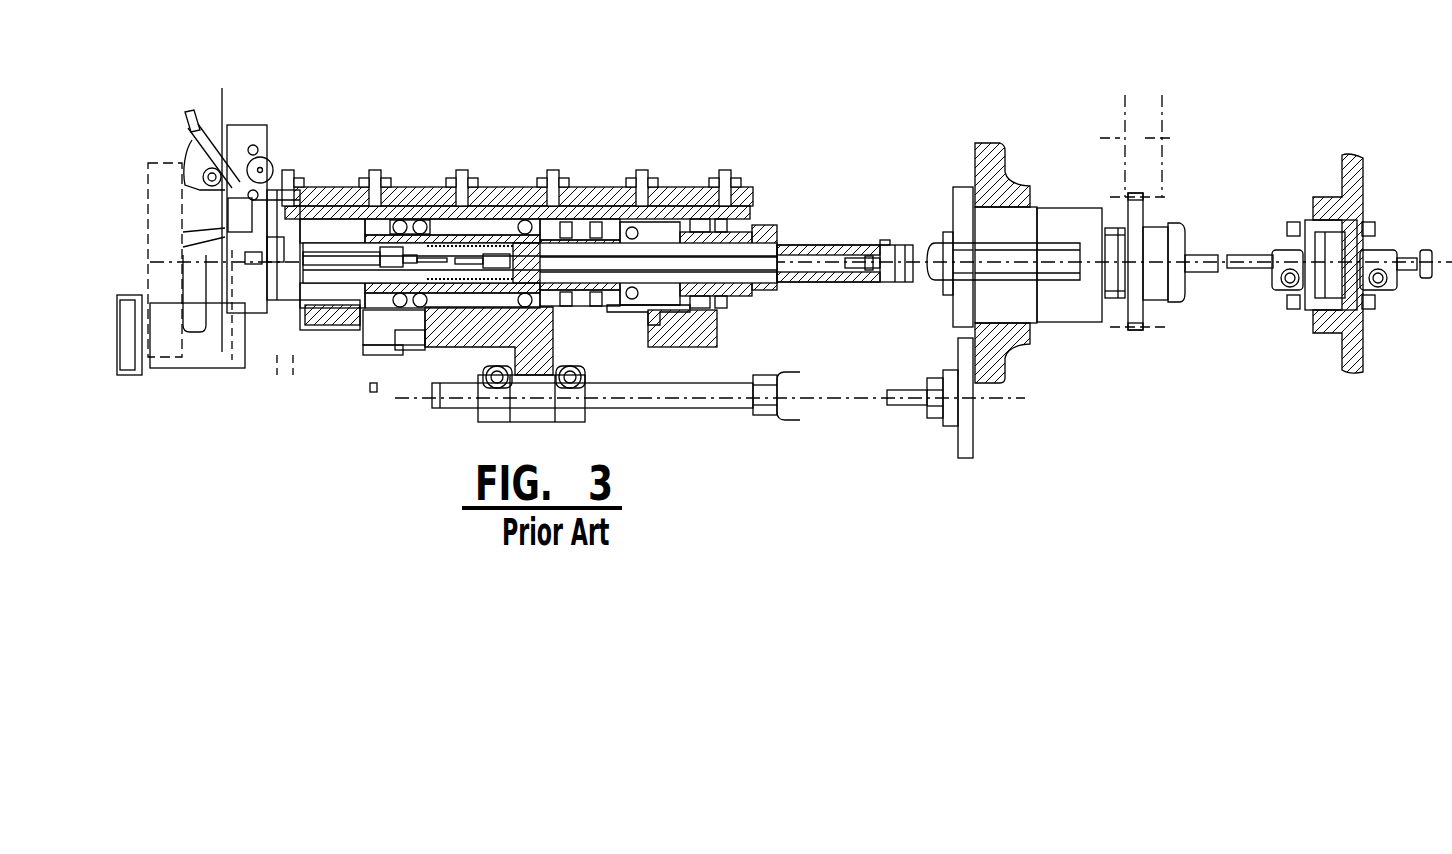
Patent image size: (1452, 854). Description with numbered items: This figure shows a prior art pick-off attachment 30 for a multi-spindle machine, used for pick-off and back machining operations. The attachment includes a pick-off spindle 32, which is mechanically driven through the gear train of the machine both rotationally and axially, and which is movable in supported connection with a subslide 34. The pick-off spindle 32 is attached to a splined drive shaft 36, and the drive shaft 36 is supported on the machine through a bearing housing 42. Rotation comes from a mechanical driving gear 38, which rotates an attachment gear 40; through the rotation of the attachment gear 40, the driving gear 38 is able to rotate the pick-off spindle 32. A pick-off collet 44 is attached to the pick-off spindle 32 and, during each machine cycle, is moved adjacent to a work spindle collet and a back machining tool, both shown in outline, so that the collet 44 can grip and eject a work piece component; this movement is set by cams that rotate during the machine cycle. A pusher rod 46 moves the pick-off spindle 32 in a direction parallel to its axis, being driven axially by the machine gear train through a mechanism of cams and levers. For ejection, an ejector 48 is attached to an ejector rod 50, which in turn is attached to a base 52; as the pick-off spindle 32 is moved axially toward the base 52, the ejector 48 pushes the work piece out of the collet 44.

The pick-off attachment 30 is at (860, 135).
The pick-off spindle 32 is at (495, 243).
The subslide 34 is at (333, 183).
The splined drive shaft 36 is at (822, 245).
The mechanical driving gear 38 is at (1147, 170).
The attachment gear 40 is at (1147, 215).
The bearing housing 42 is at (957, 187).
The pick-off collet 44 is at (300, 270).
The pusher rod 46 is at (675, 412).
The ejector 48 is at (403, 250).
The ejector rod 50 is at (1245, 272).
The base 52 is at (1310, 310).